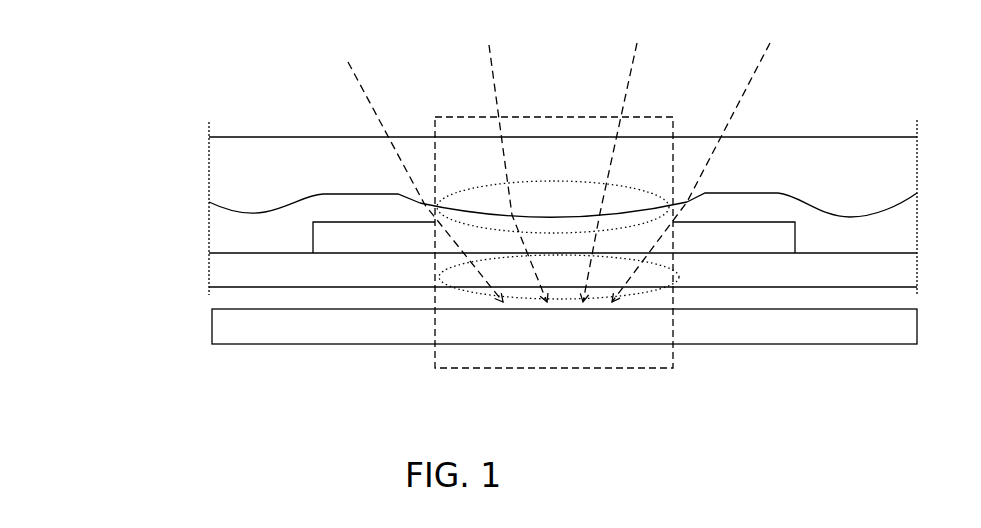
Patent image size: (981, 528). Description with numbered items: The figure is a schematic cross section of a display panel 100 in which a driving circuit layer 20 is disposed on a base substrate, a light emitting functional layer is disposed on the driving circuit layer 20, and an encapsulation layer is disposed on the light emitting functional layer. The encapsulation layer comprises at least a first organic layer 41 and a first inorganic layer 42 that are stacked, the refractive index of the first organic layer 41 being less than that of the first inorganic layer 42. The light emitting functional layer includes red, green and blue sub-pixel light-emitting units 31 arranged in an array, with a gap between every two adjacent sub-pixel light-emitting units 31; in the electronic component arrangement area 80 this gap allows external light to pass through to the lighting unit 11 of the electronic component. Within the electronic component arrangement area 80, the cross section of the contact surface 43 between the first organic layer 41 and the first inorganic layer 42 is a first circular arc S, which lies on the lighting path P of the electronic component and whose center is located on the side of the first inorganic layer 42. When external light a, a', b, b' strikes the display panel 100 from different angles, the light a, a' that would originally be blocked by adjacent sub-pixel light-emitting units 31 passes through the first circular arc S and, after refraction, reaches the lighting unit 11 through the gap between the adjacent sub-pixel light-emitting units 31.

The display panel 100 is at (255, 62).
The first inorganic layer 42 is at (245, 166).
The first organic layer 41 is at (252, 222).
The contact surface 43 is at (532, 182).
The first circular arc S is at (562, 217).
The driving circuit layer 20 is at (245, 265).
The sub-pixel light-emitting units 31 is at (372, 235).
The lighting unit 11 is at (248, 330).
The electronic component arrangement area 80 is at (485, 366).
The lighting path P is at (528, 304).
The external light a is at (423, 164).
The external light b is at (518, 164).
The external light b' is at (634, 164).
The external light a' is at (717, 164).